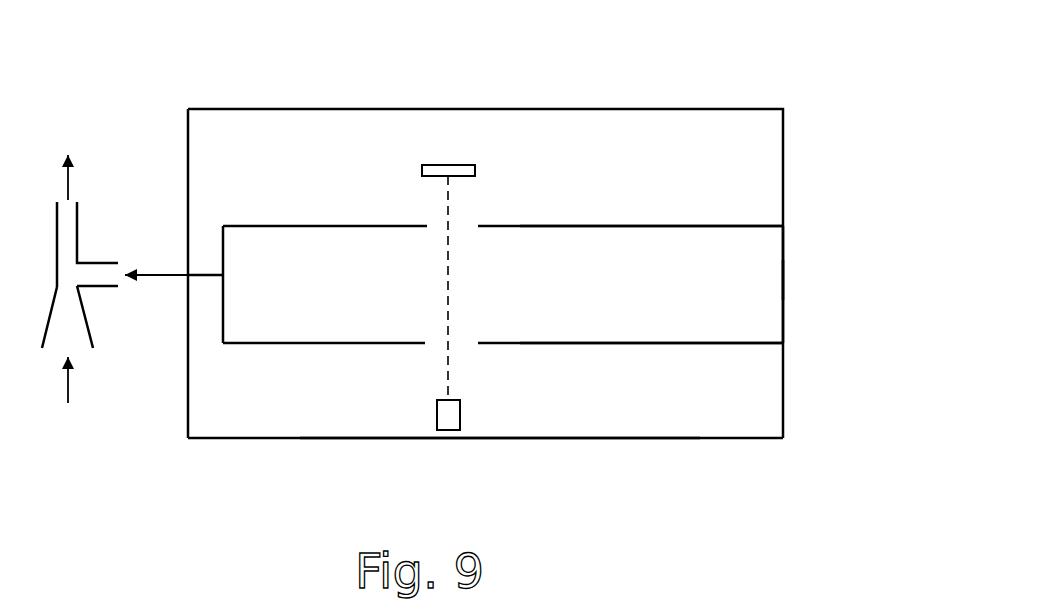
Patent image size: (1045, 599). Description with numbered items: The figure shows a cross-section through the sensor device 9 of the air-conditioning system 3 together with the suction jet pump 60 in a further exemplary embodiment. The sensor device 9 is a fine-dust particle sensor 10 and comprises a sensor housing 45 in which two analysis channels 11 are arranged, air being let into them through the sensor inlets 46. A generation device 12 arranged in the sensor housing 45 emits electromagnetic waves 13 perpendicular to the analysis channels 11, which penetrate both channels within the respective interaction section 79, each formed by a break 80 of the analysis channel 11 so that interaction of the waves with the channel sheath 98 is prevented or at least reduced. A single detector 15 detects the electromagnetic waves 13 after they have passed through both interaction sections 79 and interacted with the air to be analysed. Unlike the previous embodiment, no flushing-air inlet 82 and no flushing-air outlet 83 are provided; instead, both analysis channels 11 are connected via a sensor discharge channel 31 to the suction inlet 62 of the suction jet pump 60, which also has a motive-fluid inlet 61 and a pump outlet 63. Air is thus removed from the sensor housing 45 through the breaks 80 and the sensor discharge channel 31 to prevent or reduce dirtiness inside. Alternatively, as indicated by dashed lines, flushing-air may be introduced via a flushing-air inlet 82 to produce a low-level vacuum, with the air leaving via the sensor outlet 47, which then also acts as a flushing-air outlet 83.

The air-conditioning system 3 is at (697, 90).
The sensor device 9 is at (500, 487).
The fine-dust particle sensor 10 is at (592, 440).
The analysis channel 11 is at (560, 340).
The generation device 12 is at (445, 433).
The electromagnetic waves 13 is at (447, 270).
The detector 15 is at (475, 168).
The sensor discharge channel 31 is at (203, 272).
The sensor housing 45 is at (295, 438).
The sensor inlet 46 is at (783, 226).
The sensor outlet 47 is at (185, 274).
The suction jet pump 60 is at (74, 128).
The motive-fluid inlet 61 is at (80, 343).
The suction inlet 62 is at (117, 280).
The pump outlet 63 is at (72, 202).
The interaction section 79 is at (460, 228).
The break 80 is at (432, 227).
The flushing-air inlet 82 is at (785, 272).
The flushing-air outlet 83 is at (186, 278).
The channel sheath 98 is at (730, 227).